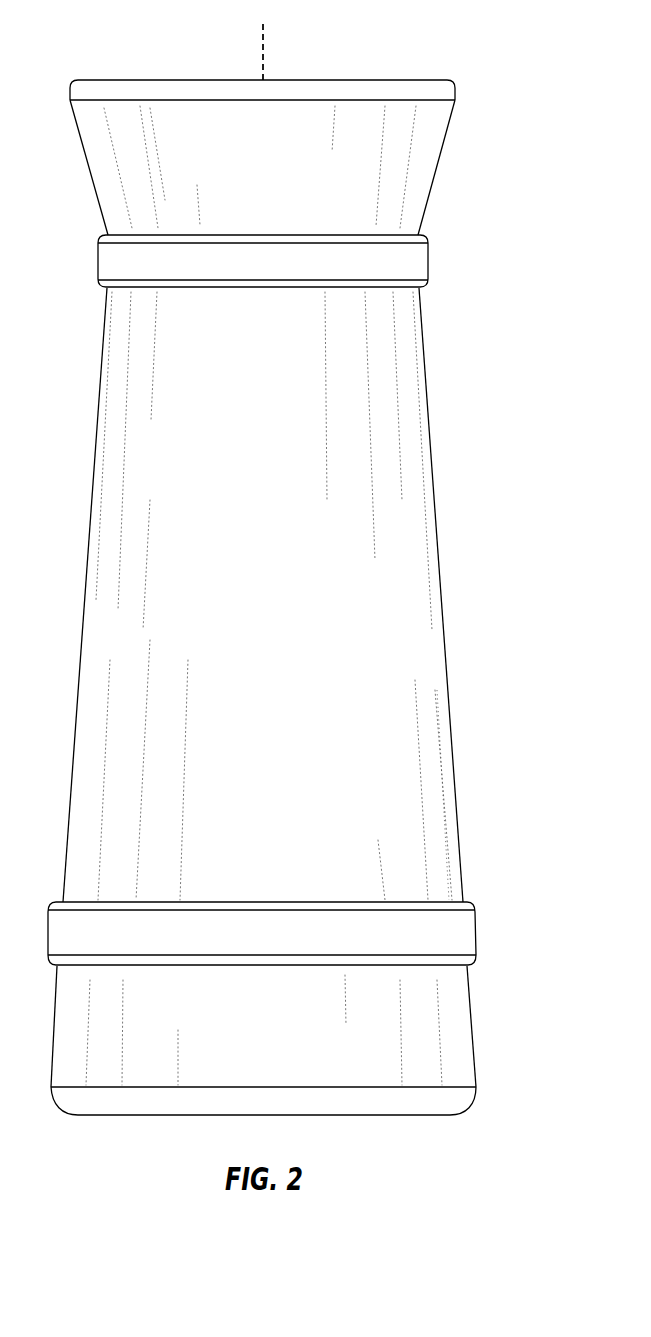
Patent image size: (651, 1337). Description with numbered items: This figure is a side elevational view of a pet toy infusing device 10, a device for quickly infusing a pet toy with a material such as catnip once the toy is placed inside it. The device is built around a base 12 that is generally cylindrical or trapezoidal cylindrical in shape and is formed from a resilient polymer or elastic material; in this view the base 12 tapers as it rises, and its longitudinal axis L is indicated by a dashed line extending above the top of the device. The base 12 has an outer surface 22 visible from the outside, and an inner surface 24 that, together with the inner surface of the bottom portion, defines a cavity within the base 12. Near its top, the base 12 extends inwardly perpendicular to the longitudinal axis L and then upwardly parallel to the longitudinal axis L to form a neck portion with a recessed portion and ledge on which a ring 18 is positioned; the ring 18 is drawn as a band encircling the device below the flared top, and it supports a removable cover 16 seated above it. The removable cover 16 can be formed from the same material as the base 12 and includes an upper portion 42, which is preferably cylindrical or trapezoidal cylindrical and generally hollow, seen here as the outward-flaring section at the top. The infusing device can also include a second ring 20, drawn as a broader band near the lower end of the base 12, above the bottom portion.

The pet toy infusing device 10 is at (324, 582).
The base 12 is at (443, 622).
The removable cover 16 is at (445, 135).
The ring 18 is at (428, 262).
The ring 20 is at (474, 936).
The outer surface 22 is at (427, 727).
The inner surface 24 is at (452, 1115).
The upper portion 42 is at (102, 162).
The longitudinal axis L is at (263, 38).